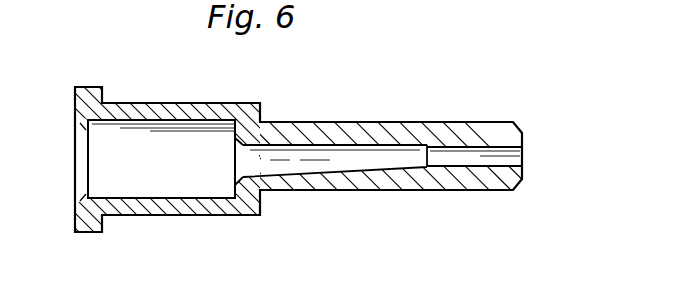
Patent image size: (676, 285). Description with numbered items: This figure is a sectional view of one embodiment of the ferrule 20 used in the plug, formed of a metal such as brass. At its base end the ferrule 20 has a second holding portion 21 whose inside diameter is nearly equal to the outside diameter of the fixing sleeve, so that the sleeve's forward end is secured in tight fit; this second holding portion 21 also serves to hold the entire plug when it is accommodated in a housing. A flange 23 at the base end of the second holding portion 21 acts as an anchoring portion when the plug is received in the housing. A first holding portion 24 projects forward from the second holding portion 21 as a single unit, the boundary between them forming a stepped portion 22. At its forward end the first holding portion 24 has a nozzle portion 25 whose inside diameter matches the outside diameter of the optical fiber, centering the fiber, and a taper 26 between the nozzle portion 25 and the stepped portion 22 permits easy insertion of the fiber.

The ferrule 20 is at (337, 122).
The second holding portion 21 is at (177, 102).
The stepped portion 22 is at (236, 182).
The flange 23 is at (88, 88).
The first holding portion 24 is at (415, 122).
The nozzle portion 25 is at (500, 167).
The taper 26 is at (362, 168).